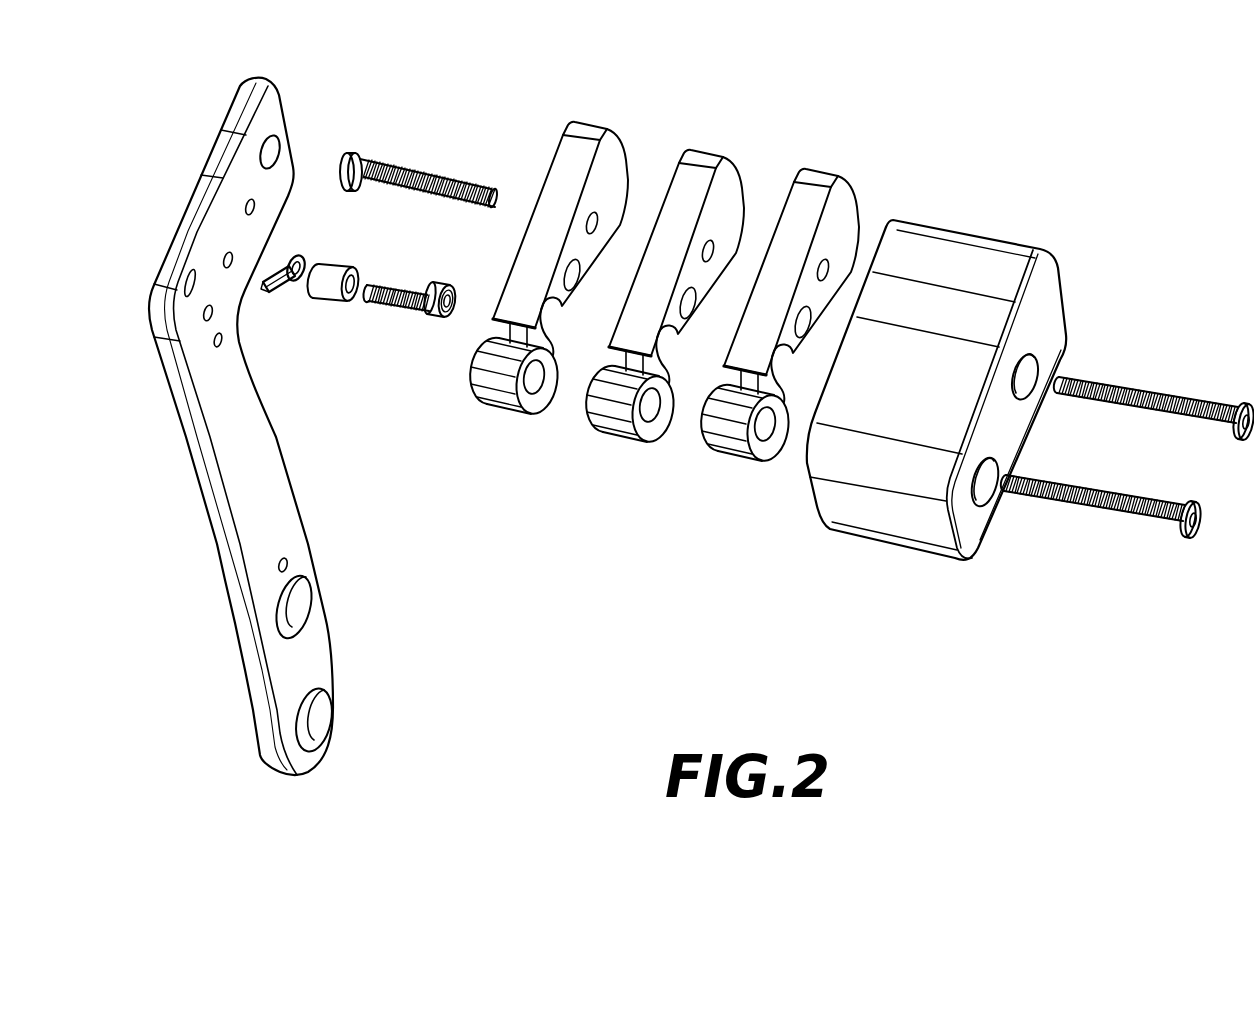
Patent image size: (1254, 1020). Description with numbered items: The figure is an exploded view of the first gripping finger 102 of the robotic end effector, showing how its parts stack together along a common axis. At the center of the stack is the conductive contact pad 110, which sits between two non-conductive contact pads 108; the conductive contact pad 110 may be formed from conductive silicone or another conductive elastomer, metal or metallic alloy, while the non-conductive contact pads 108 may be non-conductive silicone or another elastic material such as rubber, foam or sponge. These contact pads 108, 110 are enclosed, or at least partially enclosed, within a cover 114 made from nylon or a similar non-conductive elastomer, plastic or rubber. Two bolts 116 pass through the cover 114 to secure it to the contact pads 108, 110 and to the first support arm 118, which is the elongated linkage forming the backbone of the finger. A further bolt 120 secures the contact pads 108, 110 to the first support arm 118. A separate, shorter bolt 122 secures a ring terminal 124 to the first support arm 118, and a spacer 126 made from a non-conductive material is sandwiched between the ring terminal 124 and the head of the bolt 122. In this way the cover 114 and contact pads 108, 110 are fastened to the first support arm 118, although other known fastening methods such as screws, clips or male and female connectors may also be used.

The first gripping finger 102 is at (763, 663).
The non-conductive contact pads 108 is at (590, 125).
The conductive contact pad 110 is at (703, 153).
The cover 114 is at (984, 242).
The bolts 116 is at (1143, 395).
The first support arm 118 is at (284, 506).
The bolt 120 is at (405, 170).
The bolt 122 is at (398, 310).
The ring terminal 124 is at (285, 296).
The spacer 126 is at (350, 266).